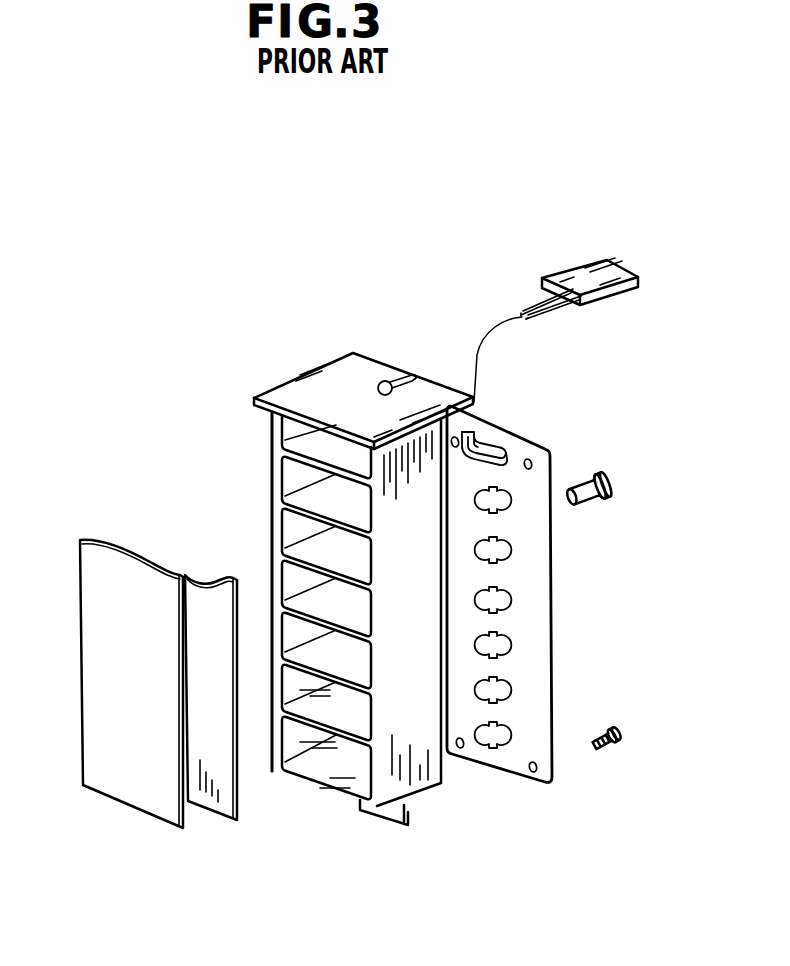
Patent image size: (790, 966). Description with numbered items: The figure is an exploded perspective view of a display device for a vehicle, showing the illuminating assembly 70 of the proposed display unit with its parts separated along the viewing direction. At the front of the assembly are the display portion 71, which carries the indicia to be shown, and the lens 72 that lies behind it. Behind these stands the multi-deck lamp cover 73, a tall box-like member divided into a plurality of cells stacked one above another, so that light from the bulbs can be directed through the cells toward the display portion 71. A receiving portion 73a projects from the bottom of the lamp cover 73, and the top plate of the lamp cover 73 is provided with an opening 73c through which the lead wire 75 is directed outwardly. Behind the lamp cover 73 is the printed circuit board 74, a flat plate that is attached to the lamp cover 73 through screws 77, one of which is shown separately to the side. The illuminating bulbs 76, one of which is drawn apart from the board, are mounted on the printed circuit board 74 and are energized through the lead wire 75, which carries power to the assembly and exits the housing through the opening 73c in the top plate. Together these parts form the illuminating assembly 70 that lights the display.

The illuminating assembly 70 is at (218, 384).
The display portion 71 is at (104, 795).
The lens 72 is at (215, 820).
The multi-deck lamp cover 73 is at (332, 383).
The receiving portion 73a is at (387, 823).
The opening 73c is at (387, 381).
The printed circuit board 74 is at (502, 782).
The lead wire 75 is at (537, 320).
The illuminating bulbs 76 is at (617, 478).
The screws 77 is at (620, 728).